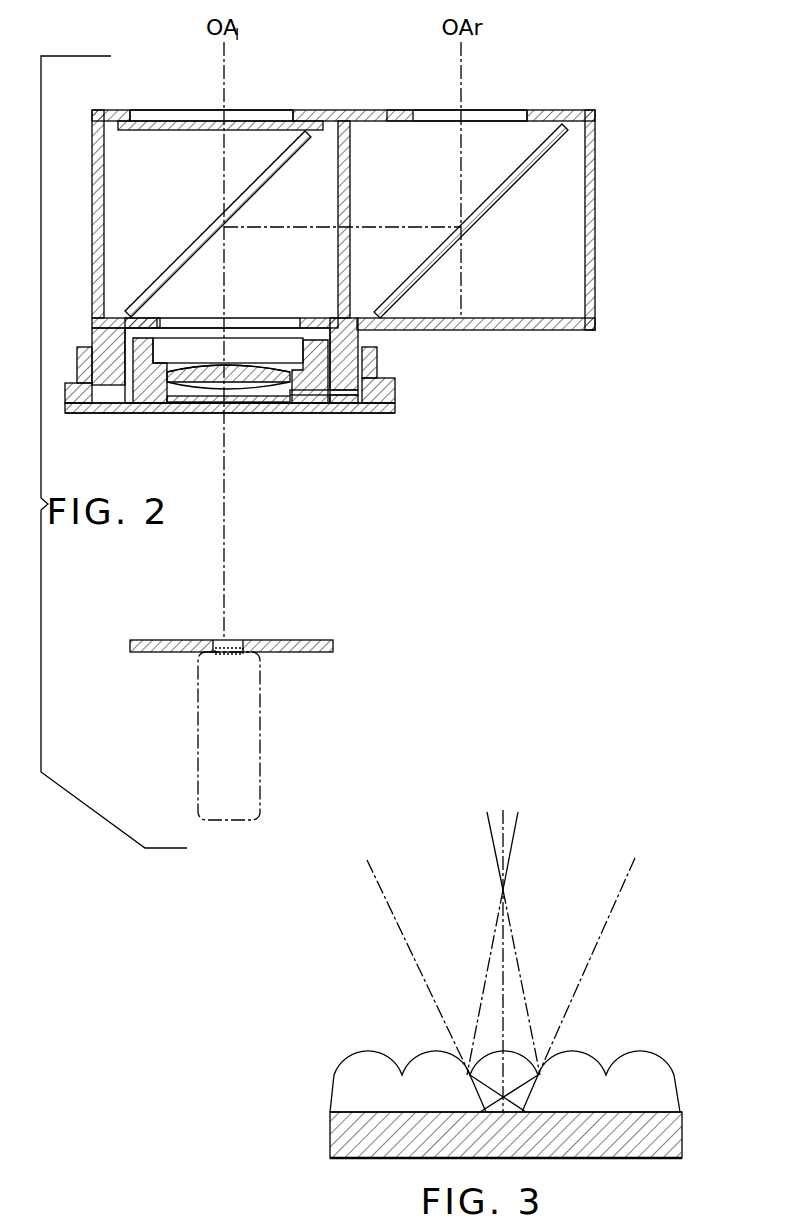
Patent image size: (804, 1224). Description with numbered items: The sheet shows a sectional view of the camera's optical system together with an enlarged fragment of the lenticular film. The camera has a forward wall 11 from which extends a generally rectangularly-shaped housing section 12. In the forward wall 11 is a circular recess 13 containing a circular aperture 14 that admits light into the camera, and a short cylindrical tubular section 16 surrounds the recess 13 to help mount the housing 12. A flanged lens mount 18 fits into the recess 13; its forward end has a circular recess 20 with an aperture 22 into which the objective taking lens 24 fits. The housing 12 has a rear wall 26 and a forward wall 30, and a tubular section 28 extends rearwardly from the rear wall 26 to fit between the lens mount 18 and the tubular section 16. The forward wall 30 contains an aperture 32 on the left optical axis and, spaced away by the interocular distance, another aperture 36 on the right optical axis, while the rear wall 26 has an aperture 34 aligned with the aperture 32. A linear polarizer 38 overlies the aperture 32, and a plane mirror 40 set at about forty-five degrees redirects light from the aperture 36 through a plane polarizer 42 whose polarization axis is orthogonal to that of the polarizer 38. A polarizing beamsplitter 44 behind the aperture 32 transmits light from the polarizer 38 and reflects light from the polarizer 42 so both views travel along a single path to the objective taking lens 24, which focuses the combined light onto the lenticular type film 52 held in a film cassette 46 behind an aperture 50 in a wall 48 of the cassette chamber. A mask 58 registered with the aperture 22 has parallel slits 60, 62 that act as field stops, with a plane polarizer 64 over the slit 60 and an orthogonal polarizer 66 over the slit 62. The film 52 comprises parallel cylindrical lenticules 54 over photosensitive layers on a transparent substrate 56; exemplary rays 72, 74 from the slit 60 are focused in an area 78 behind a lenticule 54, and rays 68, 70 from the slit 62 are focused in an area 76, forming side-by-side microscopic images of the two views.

In FIG. 2, the forward wall 11 is at (386, 413).
In FIG. 2, the housing section 12 is at (548, 110).
In FIG. 2, the circular recess 13 is at (382, 394).
In FIG. 2, the circular aperture 14 is at (342, 410).
In FIG. 2, the cylindrical tubular section 16 is at (380, 372).
In FIG. 2, the flanged lens mount 18 is at (318, 412).
In FIG. 2, the circular recess 20 is at (153, 352).
In FIG. 2, the aperture 22 is at (174, 398).
In FIG. 2, the objective taking lens 24 is at (278, 366).
In FIG. 2, the rear wall 26 is at (515, 330).
In FIG. 2, the tubular section 28 is at (362, 336).
In FIG. 2, the forward wall 30 is at (131, 110).
In FIG. 2, the aperture 32 is at (170, 116).
In FIG. 2, the aperture 34 is at (148, 321).
In FIG. 2, the aperture 36 is at (392, 118).
In FIG. 2, the linear polarizer 38 is at (192, 130).
In FIG. 2, the plane mirror 40 is at (527, 164).
In FIG. 2, the plane polarizer 42 is at (351, 176).
In FIG. 2, the polarizing beamsplitter 44 is at (272, 166).
In FIG. 2, the film cassette 46 is at (262, 718).
In FIG. 2, the wall 48 is at (306, 640).
In FIG. 2, the aperture 50 is at (240, 644).
In FIG. 2, the lenticular type film 52 is at (217, 645).
In FIG. 3, the lenticular type film 52 is at (682, 1112).
In FIG. 3, the lenticules 54 is at (650, 1050).
In FIG. 3, the transparent substrate 56 is at (684, 1136).
In FIG. 2, the mask 58 is at (288, 410).
In FIG. 2, the slit 60 is at (200, 403).
In FIG. 2, the slit 62 is at (248, 406).
In FIG. 2, the plane polarizer 64 is at (214, 380).
In FIG. 2, the polarizer 66 is at (250, 384).
In FIG. 3, the ray 68 is at (515, 822).
In FIG. 3, the ray 70 is at (625, 880).
In FIG. 3, the ray 72 is at (380, 890).
In FIG. 3, the ray 74 is at (490, 830).
In FIG. 3, the area 76 is at (490, 1110).
In FIG. 3, the area 78 is at (518, 1110).